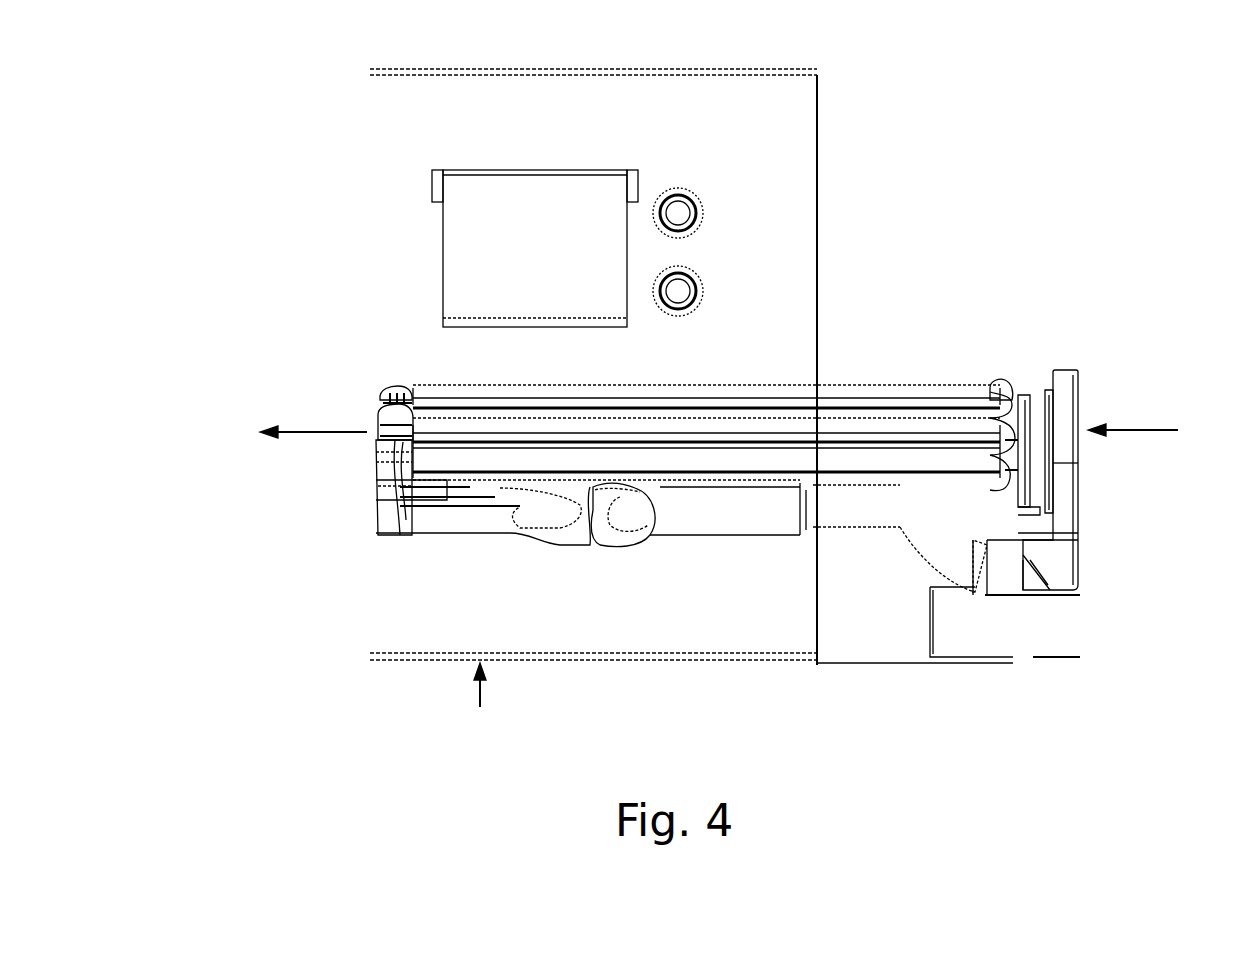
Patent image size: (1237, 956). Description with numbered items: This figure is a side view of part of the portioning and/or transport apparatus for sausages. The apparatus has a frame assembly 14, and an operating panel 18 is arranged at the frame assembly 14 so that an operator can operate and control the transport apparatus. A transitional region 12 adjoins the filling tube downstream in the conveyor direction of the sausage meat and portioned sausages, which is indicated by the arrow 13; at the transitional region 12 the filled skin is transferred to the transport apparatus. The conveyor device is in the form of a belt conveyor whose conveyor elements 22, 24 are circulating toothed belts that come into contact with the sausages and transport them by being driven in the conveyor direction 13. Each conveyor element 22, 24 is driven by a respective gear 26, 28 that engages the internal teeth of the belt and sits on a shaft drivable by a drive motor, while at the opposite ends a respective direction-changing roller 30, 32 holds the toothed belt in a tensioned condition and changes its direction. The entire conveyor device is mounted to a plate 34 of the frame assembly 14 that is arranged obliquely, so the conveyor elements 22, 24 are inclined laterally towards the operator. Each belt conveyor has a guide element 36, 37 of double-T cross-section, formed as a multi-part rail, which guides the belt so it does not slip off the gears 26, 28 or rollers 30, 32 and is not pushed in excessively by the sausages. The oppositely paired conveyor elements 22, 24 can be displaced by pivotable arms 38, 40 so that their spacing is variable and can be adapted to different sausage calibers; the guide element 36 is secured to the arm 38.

The transitional region 12 is at (1032, 333).
The conveyor direction arrow 13 is at (302, 428).
The frame assembly 14 is at (469, 714).
The operating panel 18 is at (535, 248).
The conveyor element 22 is at (378, 415).
The conveyor element 24 is at (377, 457).
The gear 26 is at (396, 385).
The gear 28 is at (395, 442).
The direction-changing roller 30 is at (1003, 385).
The direction-changing roller 32 is at (1003, 450).
The plate 34 is at (725, 367).
The guide element 36 is at (881, 395).
The guide element 37 is at (848, 428).
The pivotable arm 38 is at (655, 545).
The pivotable arm 40 is at (498, 522).